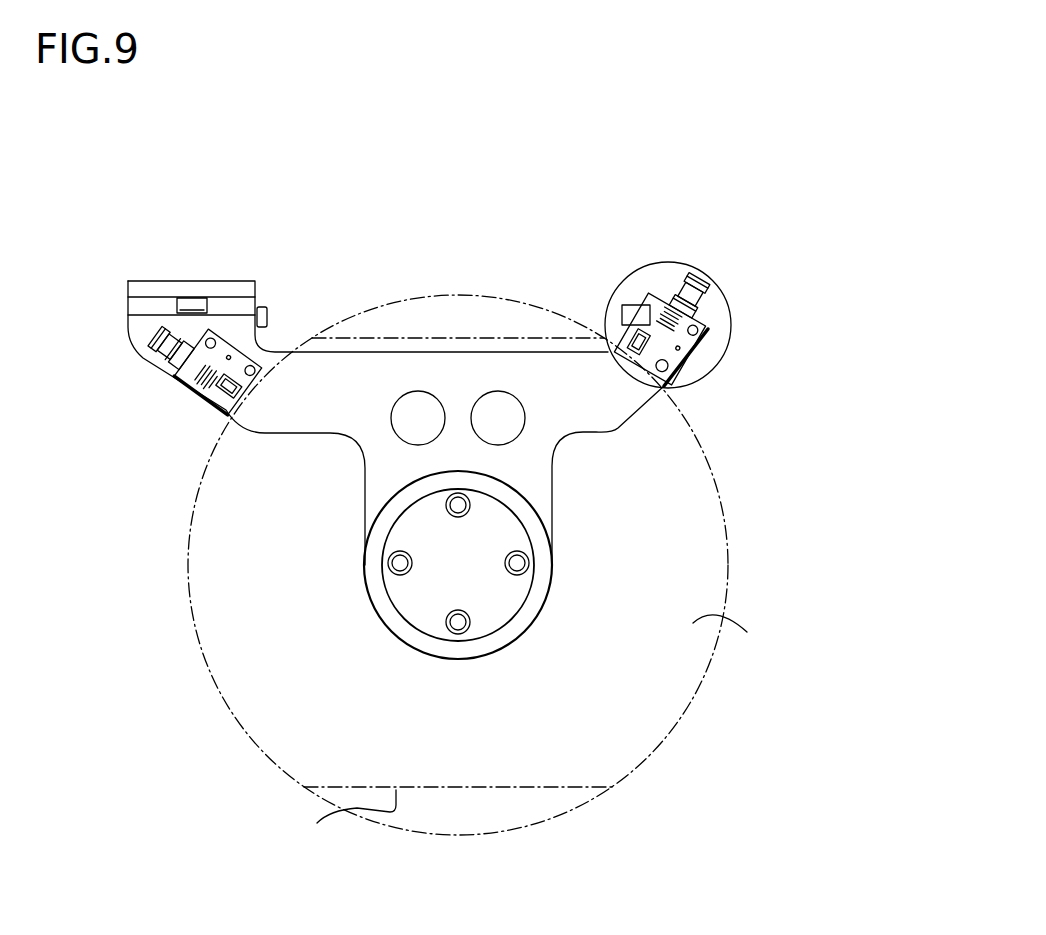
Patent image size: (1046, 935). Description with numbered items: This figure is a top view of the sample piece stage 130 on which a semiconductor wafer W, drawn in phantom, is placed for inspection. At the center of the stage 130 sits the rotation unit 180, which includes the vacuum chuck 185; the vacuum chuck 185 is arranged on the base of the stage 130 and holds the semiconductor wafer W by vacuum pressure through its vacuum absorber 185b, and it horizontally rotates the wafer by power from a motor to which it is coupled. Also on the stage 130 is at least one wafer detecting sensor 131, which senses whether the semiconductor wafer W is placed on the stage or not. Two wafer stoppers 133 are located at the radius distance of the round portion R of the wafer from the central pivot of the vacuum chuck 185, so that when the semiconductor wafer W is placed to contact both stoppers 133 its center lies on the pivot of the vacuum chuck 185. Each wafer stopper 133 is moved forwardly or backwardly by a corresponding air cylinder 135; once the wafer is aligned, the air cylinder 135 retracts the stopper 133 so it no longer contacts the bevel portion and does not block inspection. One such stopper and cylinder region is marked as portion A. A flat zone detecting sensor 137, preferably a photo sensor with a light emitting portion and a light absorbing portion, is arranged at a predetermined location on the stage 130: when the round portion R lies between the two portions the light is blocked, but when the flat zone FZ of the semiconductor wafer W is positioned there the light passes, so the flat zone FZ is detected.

The sample piece stage 130 is at (602, 405).
The wafer detecting sensor 131 is at (513, 393).
The wafer stopper 133 is at (703, 382).
The air cylinder 135 is at (733, 318).
The flat zone detecting sensor 137 is at (266, 311).
The rotation unit 180 is at (497, 637).
The vacuum chuck 185 is at (506, 605).
The vacuum absorber 185b is at (462, 628).
The semiconductor wafer W is at (762, 637).
The flat zone FZ is at (318, 826).
The round portion R is at (463, 296).
The portion A is at (712, 281).